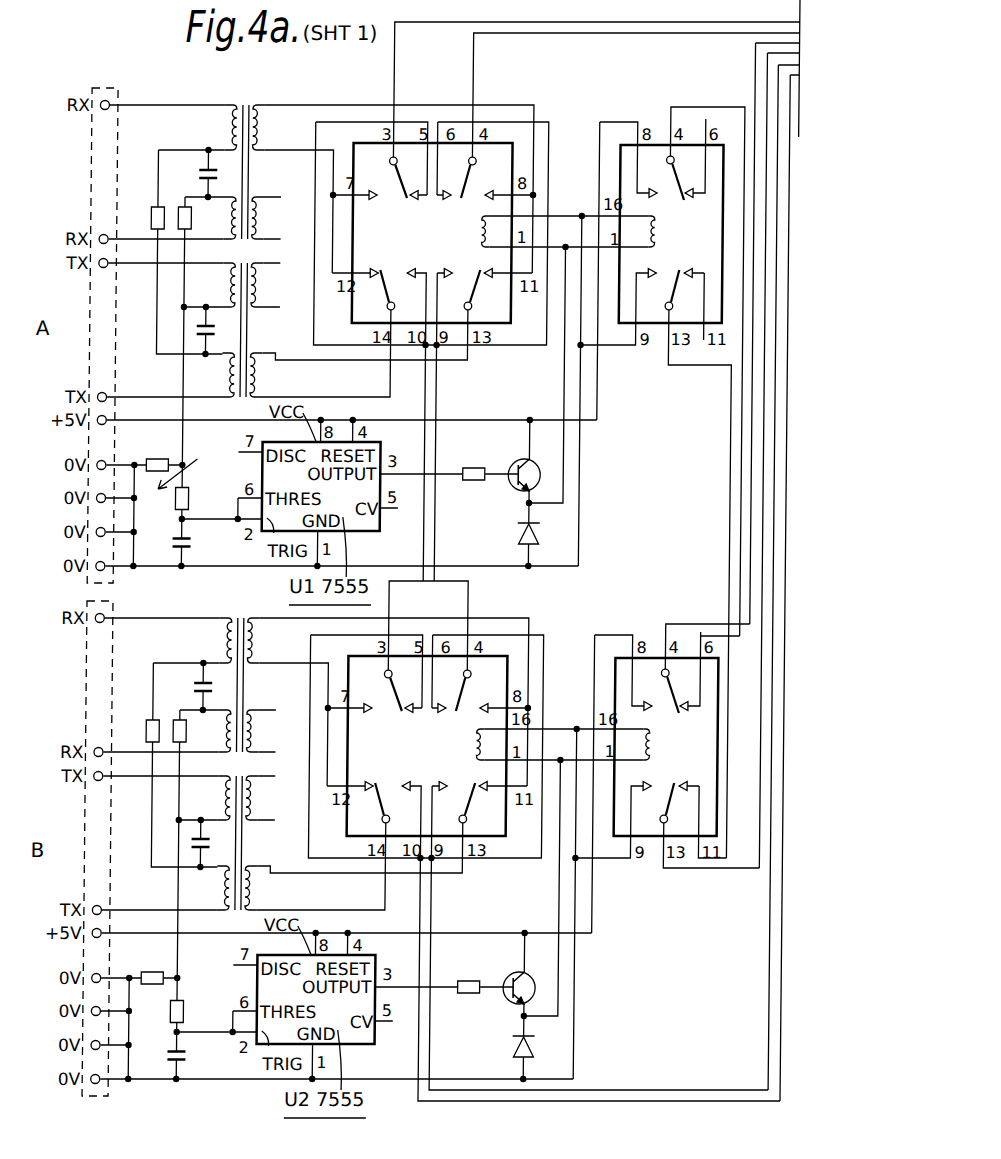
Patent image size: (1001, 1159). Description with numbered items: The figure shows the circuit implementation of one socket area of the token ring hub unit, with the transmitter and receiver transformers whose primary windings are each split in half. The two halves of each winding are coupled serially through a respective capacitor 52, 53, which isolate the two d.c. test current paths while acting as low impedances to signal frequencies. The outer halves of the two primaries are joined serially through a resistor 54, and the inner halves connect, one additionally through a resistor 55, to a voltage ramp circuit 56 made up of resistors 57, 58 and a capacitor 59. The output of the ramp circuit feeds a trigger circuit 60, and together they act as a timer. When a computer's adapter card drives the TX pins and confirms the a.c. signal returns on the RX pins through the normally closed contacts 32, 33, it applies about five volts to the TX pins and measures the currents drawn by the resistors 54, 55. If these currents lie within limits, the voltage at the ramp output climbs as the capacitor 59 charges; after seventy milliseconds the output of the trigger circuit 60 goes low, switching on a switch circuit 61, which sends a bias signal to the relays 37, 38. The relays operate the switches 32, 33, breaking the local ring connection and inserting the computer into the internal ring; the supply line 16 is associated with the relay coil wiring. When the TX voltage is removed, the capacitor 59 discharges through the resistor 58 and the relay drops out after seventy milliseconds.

The relay coil supply line 16 is at (514, 213).
The normally closed contact 32 is at (404, 245).
The normally closed contact 33 is at (474, 245).
The relay 37 is at (489, 243).
The relay 38 is at (658, 229).
The capacitor 52 is at (206, 167).
The capacitor 53 is at (205, 340).
The resistor 54 is at (153, 207).
The resistor 55 is at (183, 207).
The voltage ramp circuit 56 is at (191, 466).
The resistor 57 is at (168, 462).
The resistor 58 is at (194, 498).
The capacitor 59 is at (194, 548).
The trigger circuit 60 is at (349, 504).
The switch circuit 61 is at (516, 465).